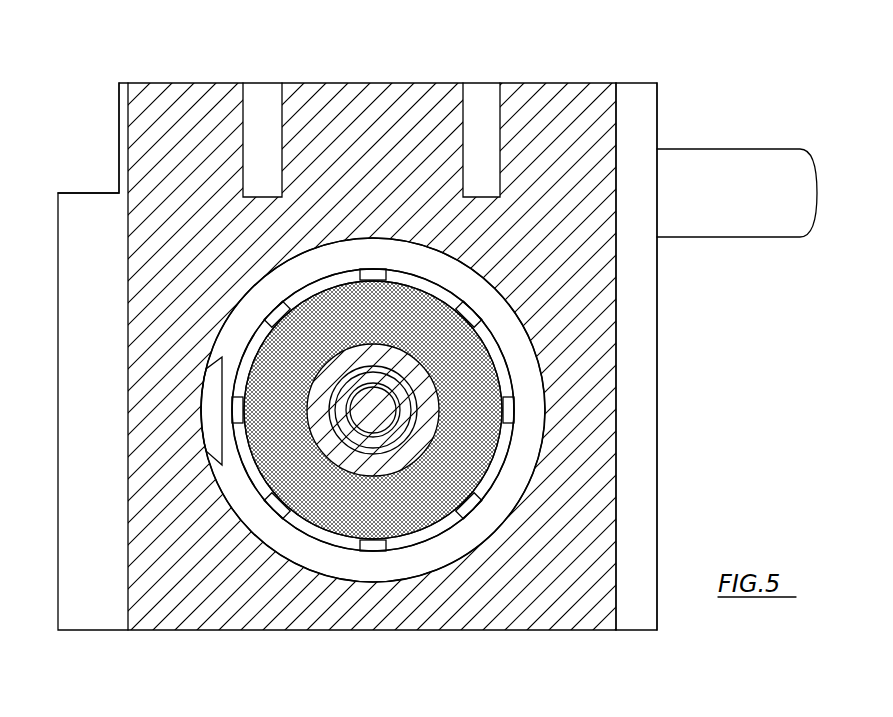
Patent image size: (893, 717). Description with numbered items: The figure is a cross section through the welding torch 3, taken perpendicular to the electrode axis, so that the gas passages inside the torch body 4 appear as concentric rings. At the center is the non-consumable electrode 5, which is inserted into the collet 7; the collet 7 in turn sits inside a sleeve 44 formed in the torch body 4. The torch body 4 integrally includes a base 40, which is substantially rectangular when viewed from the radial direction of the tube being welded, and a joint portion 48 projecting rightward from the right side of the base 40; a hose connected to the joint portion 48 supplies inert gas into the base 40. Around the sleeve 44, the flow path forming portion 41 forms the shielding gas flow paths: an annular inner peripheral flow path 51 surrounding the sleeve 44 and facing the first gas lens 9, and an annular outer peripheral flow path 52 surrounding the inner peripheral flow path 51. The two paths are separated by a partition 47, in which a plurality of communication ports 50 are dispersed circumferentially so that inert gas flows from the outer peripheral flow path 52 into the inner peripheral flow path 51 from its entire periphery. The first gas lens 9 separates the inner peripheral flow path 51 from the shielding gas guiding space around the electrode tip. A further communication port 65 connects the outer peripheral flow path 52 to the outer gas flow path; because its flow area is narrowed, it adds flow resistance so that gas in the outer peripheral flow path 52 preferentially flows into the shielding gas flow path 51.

The welding torch 3 is at (791, 362).
The torch body 4 is at (682, 465).
The non-consumable electrode 5 is at (356, 270).
The collet 7 is at (403, 275).
The first gas lens 9 is at (430, 532).
The base 40 is at (657, 330).
The flow path forming portion 41 is at (119, 121).
The sleeve 44 is at (247, 482).
The partition 47 is at (375, 553).
The joint portion 48 is at (737, 149).
The communication port 50 is at (338, 557).
The inner peripheral flow path 51 is at (293, 528).
The outer peripheral flow path 52 is at (410, 567).
The communication port 65 is at (207, 448).